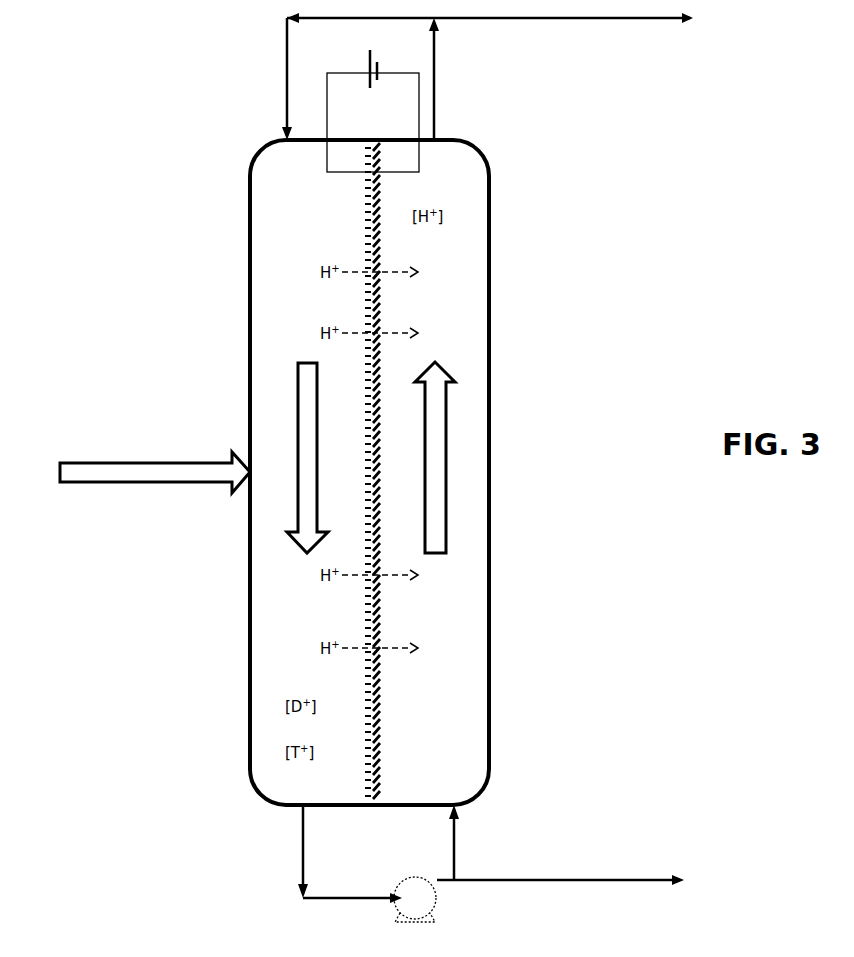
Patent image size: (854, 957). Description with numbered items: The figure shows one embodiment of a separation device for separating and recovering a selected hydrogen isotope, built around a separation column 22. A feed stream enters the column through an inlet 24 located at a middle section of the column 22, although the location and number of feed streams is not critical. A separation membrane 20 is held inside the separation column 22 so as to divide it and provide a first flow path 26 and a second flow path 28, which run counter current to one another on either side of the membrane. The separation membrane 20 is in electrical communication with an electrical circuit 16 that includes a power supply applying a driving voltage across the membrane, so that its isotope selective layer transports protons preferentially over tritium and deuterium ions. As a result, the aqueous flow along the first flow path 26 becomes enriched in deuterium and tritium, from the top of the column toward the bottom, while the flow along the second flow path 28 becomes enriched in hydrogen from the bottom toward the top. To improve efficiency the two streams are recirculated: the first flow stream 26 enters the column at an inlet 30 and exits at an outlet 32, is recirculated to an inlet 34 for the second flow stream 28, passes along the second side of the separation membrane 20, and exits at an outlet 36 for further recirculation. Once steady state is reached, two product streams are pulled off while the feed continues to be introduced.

The electrical circuit 16 is at (352, 73).
The separation membrane 20 is at (364, 238).
The separation column 22 is at (490, 270).
The inlet 24 is at (150, 470).
The first flow path 26 is at (297, 450).
The second flow path 28 is at (447, 470).
The inlet 30 is at (283, 136).
The outlet 32 is at (299, 807).
The inlet 34 is at (458, 807).
The outlet 36 is at (437, 137).